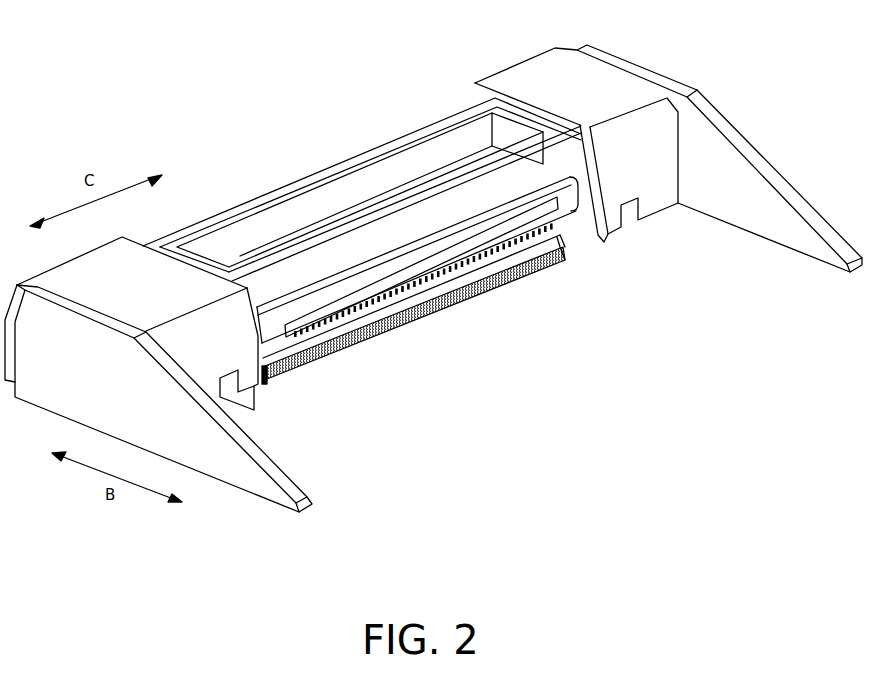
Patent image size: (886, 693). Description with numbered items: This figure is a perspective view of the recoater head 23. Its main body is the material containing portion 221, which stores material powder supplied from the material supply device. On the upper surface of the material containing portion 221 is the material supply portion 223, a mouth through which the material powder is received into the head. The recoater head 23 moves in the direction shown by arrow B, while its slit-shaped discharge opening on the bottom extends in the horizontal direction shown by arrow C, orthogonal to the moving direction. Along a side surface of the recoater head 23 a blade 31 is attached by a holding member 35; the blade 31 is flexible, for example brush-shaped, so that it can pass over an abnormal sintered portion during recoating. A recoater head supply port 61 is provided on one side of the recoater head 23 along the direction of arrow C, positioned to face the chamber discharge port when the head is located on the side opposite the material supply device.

The recoater head 23 is at (425, 105).
The material containing portion 221 is at (228, 223).
The material supply portion 223 is at (359, 185).
The blade 31 is at (384, 332).
The holding member 35 is at (440, 278).
The recoater head supply port 61 is at (553, 257).